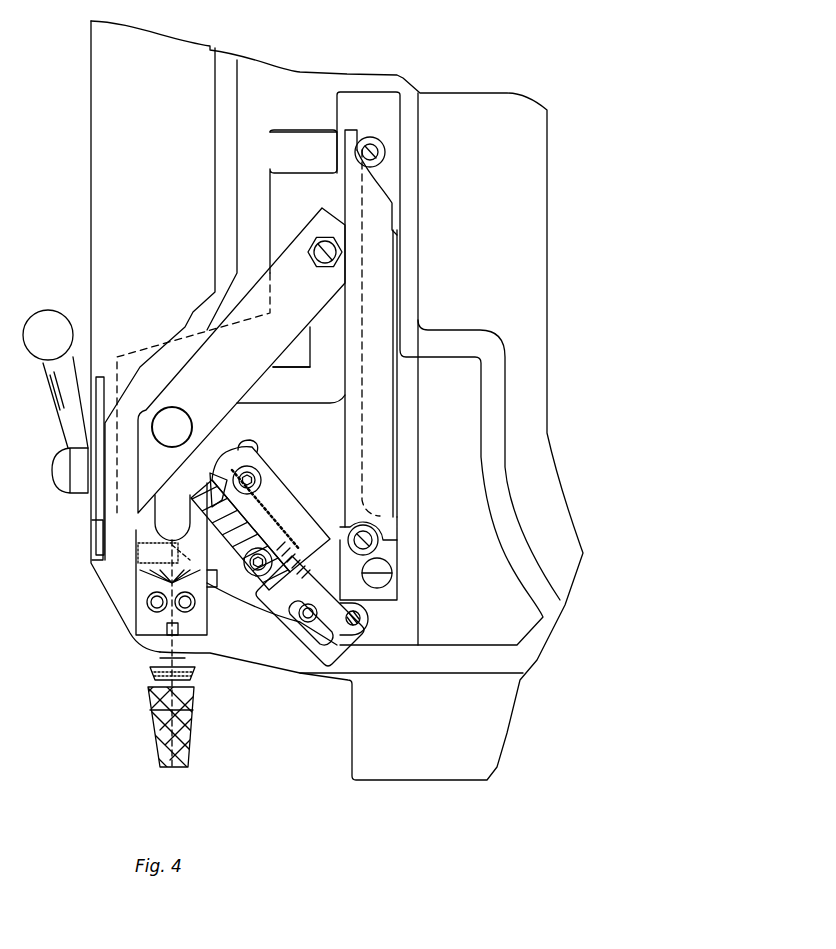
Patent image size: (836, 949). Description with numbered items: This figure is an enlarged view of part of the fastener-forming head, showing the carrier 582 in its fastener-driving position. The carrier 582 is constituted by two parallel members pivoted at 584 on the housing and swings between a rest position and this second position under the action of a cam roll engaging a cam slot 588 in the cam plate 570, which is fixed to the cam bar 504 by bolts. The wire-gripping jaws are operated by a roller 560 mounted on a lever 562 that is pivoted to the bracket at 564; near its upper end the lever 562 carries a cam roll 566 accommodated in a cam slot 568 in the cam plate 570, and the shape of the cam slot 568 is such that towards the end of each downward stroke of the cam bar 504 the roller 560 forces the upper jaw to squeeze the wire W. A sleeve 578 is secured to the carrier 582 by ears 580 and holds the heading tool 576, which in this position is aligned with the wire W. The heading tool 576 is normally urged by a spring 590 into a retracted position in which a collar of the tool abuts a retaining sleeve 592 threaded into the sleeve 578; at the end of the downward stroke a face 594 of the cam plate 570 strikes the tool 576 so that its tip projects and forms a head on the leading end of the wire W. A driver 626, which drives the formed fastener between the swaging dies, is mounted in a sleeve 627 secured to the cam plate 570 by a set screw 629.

The cam bar 504 is at (476, 568).
The roller 560 is at (355, 537).
The lever 562 is at (345, 433).
The pivot 564 is at (383, 571).
The cam roll 566 is at (368, 142).
The cam slot 568 is at (385, 189).
The cam plate 570 is at (278, 214).
The heading tool 576 is at (300, 612).
The sleeve 578 is at (245, 535).
The ears 580 is at (261, 480).
The carrier 582 is at (234, 387).
The pivot 584 is at (172, 417).
The cam slot 588 is at (303, 367).
The spring 590 is at (290, 527).
The retaining sleeve 592 is at (213, 483).
The face 594 is at (240, 447).
The driver 626 is at (170, 648).
The sleeve 627 is at (192, 546).
The set screw 629 is at (138, 565).
The wire W is at (172, 703).